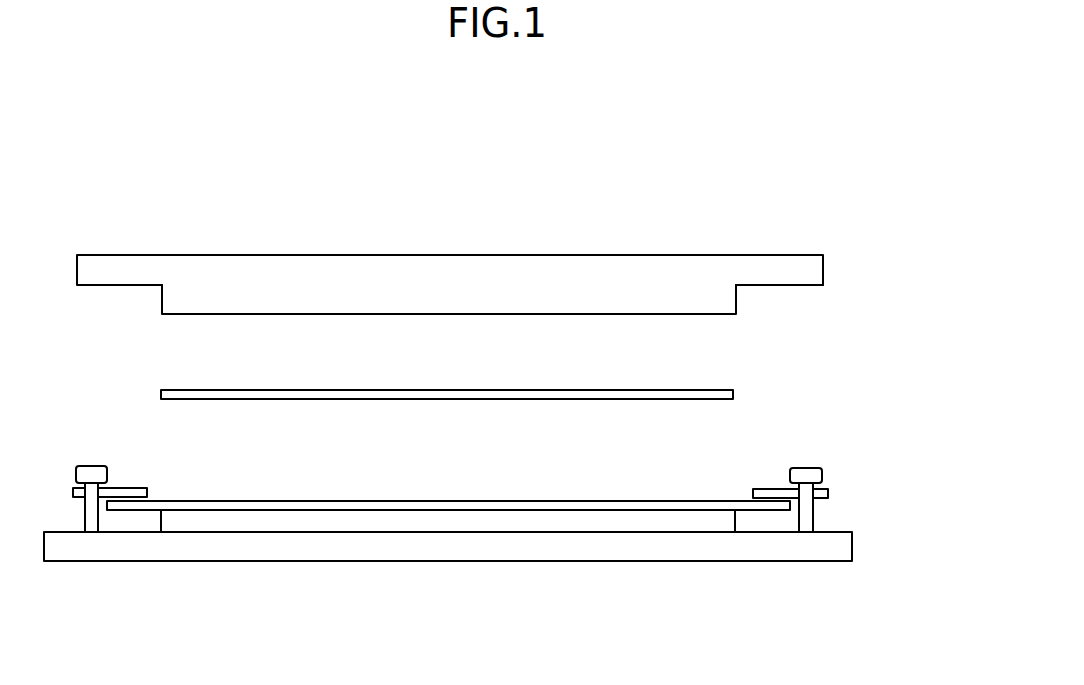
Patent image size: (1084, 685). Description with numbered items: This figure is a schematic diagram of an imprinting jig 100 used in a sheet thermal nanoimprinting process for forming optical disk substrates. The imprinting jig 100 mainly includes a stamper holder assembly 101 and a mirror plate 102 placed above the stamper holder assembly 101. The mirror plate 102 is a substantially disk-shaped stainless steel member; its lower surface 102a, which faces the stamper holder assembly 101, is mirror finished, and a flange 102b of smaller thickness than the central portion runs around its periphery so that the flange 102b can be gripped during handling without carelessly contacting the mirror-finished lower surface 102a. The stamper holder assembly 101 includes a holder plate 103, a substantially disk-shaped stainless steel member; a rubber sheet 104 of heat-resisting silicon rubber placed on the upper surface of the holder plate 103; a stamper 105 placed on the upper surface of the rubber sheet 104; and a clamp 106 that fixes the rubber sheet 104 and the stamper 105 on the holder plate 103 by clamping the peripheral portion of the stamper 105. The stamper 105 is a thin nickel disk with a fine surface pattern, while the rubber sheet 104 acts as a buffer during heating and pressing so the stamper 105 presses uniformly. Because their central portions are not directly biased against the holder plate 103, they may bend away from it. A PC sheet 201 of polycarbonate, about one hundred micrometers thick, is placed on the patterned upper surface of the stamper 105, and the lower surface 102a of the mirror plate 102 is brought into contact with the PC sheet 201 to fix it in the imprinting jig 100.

The imprinting jig 100 is at (602, 155).
The stamper holder assembly 101 is at (412, 575).
The mirror plate 102 is at (607, 255).
The lower surface 102a is at (373, 314).
The flange 102b is at (823, 262).
The holder plate 103 is at (600, 545).
The rubber sheet 104 is at (268, 520).
The stamper 105 is at (635, 505).
The clamp 106 is at (805, 473).
The PC sheet 201 is at (694, 391).